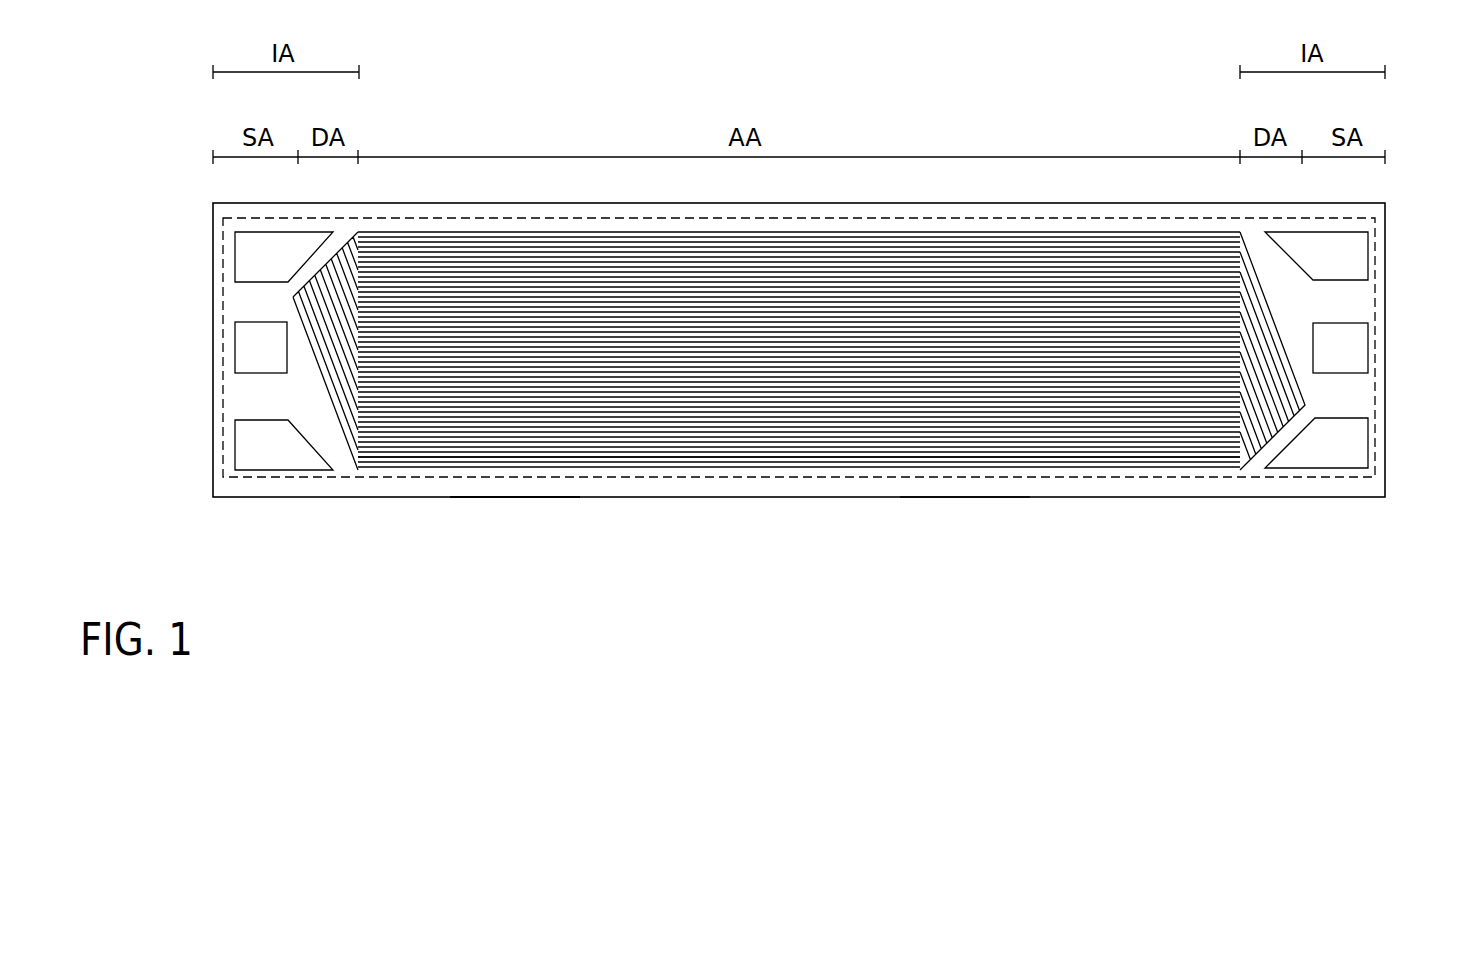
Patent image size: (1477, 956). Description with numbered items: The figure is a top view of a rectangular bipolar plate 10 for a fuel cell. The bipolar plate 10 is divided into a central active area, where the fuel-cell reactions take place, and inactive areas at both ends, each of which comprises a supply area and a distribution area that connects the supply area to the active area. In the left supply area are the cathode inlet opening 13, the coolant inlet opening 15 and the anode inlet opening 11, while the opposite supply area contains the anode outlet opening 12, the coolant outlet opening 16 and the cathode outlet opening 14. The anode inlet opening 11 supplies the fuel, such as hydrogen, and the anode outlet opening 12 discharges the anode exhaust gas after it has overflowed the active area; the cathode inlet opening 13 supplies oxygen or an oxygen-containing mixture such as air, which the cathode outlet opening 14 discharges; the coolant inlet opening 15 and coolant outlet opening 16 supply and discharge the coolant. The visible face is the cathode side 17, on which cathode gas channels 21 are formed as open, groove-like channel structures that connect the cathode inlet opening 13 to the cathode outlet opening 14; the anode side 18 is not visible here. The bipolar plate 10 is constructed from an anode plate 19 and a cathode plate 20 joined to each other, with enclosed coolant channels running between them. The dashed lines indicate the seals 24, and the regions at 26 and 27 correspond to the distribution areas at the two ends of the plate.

The bipolar plate 10 is at (659, 508).
The anode inlet opening 11 is at (247, 443).
The anode outlet opening 12 is at (1343, 248).
The cathode inlet opening 13 is at (247, 247).
The cathode outlet opening 14 is at (1343, 455).
The coolant inlet opening 15 is at (247, 347).
The coolant outlet opening 16 is at (1343, 352).
The cathode side 17 is at (906, 456).
The anode side 18 is at (965, 498).
The anode plate 19 is at (513, 497).
The cathode plate 20 is at (513, 497).
The cathode gas channels 21 is at (773, 434).
The seals 24 is at (290, 477).
The distribution area 26 is at (336, 508).
The distribution area 27 is at (1232, 482).